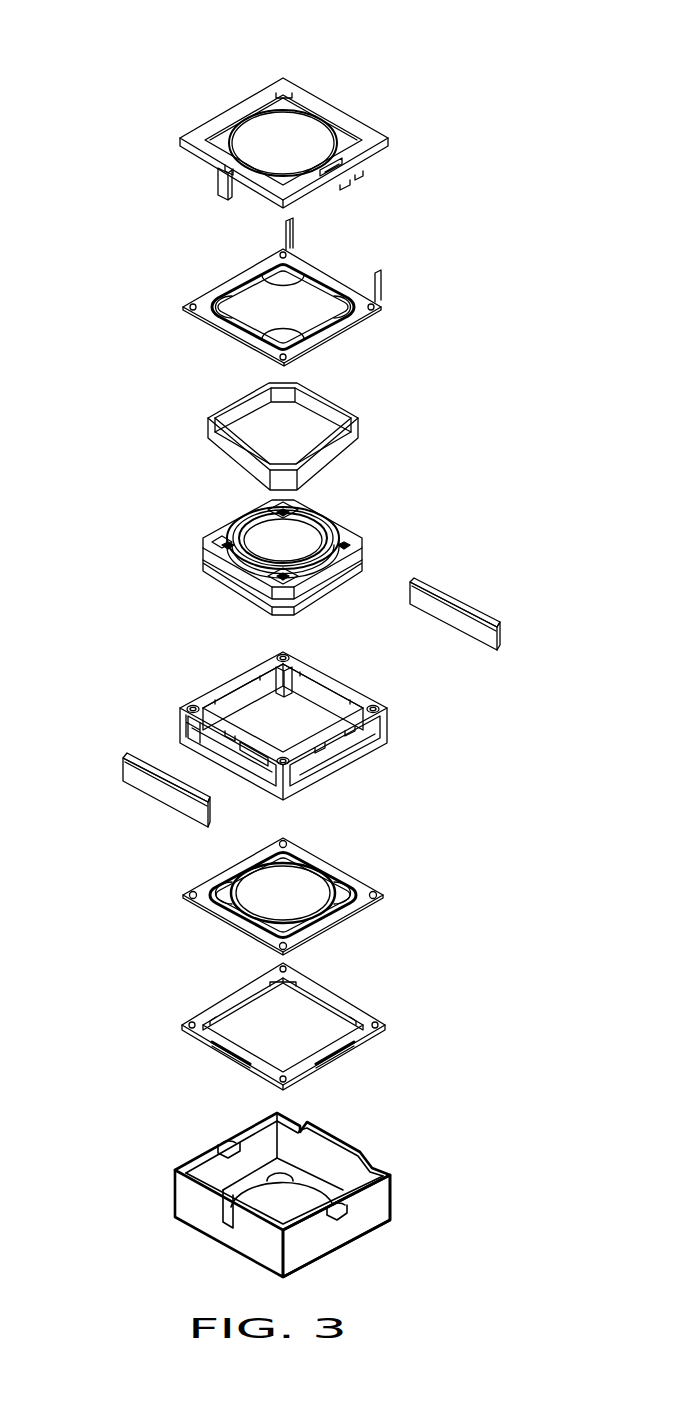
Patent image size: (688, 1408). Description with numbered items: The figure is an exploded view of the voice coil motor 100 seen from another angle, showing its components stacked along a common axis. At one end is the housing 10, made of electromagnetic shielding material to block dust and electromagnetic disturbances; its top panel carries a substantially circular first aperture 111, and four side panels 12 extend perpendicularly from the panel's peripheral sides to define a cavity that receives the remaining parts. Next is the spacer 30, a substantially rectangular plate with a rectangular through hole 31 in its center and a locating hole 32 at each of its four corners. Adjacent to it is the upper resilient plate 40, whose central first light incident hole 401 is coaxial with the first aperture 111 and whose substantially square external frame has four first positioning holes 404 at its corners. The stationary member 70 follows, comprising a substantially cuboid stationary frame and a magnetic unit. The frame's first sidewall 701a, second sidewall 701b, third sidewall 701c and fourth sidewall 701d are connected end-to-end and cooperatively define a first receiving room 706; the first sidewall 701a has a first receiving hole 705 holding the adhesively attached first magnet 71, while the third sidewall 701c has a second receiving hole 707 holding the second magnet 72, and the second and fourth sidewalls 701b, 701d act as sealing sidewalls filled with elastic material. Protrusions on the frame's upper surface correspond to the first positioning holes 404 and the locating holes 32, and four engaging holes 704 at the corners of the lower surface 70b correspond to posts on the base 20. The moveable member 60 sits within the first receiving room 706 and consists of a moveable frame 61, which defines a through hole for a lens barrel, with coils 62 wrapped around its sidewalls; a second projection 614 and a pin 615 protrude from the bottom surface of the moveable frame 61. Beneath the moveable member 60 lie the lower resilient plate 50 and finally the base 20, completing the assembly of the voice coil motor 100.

The voice coil motor 100 is at (302, 44).
The base 20 is at (345, 120).
The lower resilient plate 50 is at (312, 272).
The moveable member 60 is at (453, 388).
The coils 62 is at (327, 415).
The moveable frame 61 is at (282, 541).
The second projection 614 is at (228, 522).
The pin 615 is at (220, 542).
The first magnet 71 is at (465, 608).
The second magnet 72 is at (163, 795).
The stationary member 70 is at (286, 724).
The lower surface 70b is at (350, 692).
The first sidewall 701a is at (400, 722).
The second sidewall 701b is at (365, 742).
The third sidewall 701c is at (203, 750).
The fourth sidewall 701d is at (267, 653).
The engaging holes 704 is at (187, 707).
The first receiving hole 705 is at (307, 682).
The first receiving room 706 is at (252, 723).
The second receiving hole 707 is at (247, 762).
The upper resilient plate 40 is at (286, 901).
The first light incident hole 401 is at (252, 908).
The first positioning holes 404 is at (188, 893).
The spacer 30 is at (289, 1030).
The through hole 31 is at (238, 1037).
The locating hole 32 is at (190, 1023).
The housing 10 is at (265, 1201).
The first aperture 111 is at (307, 1200).
The side panels 12 is at (320, 1243).